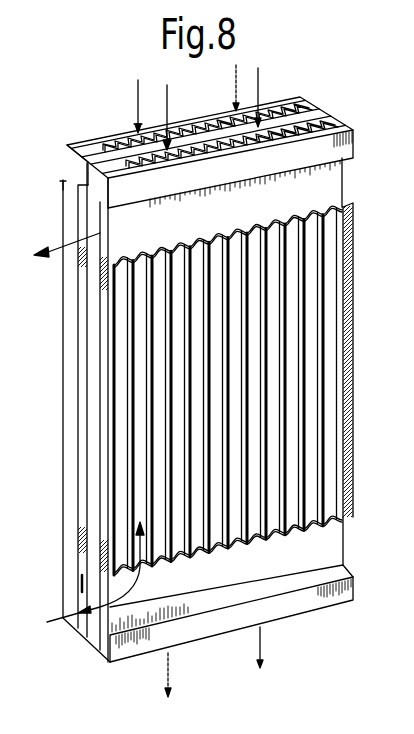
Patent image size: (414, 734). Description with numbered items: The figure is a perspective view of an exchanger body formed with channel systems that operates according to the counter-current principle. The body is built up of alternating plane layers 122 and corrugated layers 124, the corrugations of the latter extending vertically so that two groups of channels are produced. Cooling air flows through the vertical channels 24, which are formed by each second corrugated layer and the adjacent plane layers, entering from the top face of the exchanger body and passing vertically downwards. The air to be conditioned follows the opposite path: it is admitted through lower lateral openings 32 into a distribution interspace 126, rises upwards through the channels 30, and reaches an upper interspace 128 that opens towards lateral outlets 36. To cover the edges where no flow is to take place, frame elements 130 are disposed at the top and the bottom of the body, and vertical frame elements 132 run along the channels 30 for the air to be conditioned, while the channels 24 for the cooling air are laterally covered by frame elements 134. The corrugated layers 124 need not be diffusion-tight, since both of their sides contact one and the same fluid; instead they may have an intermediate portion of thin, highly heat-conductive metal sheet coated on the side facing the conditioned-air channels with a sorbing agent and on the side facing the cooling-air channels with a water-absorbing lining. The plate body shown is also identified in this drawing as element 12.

The filter plate 12 is at (257, 315).
The vertical channels 24 is at (108, 138).
The channels 30 is at (233, 236).
The lower lateral openings 32 is at (82, 582).
The lateral outlets 36 is at (78, 197).
The plane layers 122 is at (188, 124).
The corrugated layers 124 is at (273, 100).
The distribution interspace 126 is at (330, 555).
The upper interspace 128 is at (110, 223).
The frame elements 130 is at (333, 133).
The vertical frame elements 132 is at (107, 360).
The frame elements 134 is at (74, 147).